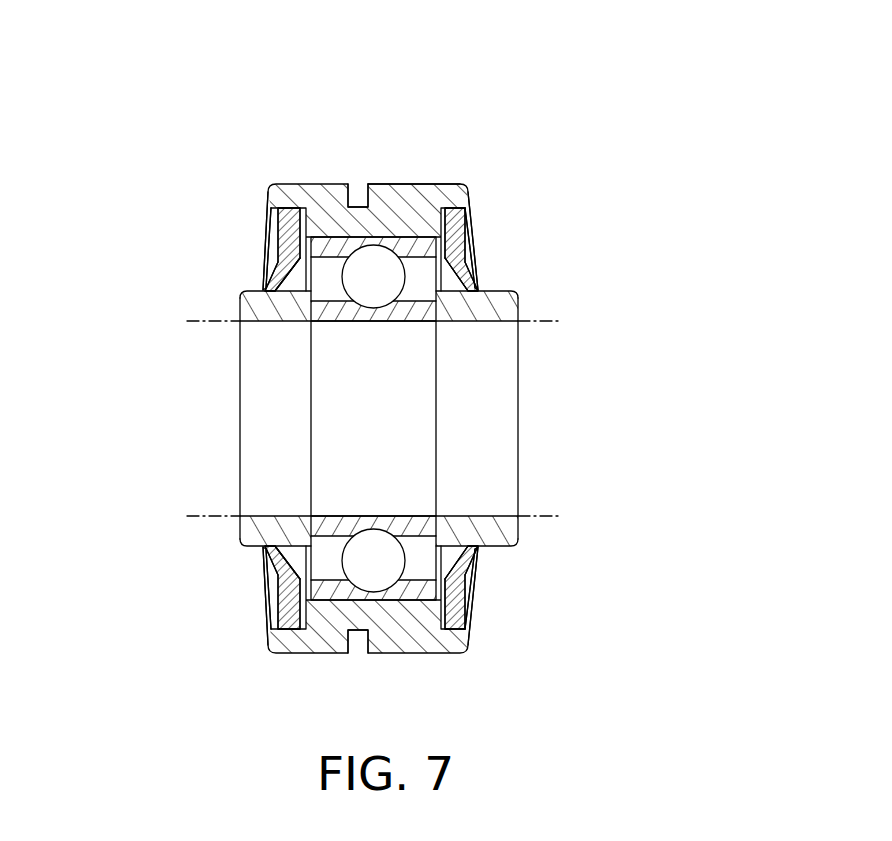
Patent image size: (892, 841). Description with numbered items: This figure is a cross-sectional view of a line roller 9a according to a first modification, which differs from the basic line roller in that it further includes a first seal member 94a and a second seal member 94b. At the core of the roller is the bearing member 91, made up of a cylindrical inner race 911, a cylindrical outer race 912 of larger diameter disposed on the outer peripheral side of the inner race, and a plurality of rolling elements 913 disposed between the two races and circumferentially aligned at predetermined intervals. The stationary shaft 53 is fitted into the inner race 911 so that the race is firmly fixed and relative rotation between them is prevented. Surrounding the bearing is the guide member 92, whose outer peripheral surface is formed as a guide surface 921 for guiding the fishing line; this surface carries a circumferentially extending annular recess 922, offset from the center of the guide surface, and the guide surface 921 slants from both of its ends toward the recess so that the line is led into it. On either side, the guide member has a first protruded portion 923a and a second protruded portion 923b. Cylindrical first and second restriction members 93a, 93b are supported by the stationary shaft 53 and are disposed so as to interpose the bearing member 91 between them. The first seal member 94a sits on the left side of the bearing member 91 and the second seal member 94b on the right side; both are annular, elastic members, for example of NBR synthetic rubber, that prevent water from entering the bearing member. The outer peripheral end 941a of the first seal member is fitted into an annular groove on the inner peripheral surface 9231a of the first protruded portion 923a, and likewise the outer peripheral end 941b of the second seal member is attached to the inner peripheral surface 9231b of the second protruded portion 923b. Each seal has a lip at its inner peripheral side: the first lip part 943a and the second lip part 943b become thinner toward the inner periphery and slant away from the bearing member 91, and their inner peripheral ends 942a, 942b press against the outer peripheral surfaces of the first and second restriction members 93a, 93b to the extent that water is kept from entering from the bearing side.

The line roller 9a is at (371, 328).
The guide member 92 is at (370, 371).
The guide surface 921 is at (408, 184).
The annular recess 922 is at (357, 205).
The first protruded portion 923a is at (272, 191).
The second protruded portion 923b is at (469, 196).
The inner peripheral surface of the first protruded portion 9231a is at (268, 216).
The inner peripheral surface of the second protruded portion 9231b is at (470, 216).
The first seal member 94a is at (185, 410).
The second seal member 94b is at (558, 412).
The outer peripheral end of the first seal member 941a is at (277, 217).
The outer peripheral end of the second seal member 941b is at (473, 222).
The inner peripheral end of the first lip part 942a is at (263, 290).
The inner peripheral end of the second lip part 942b is at (480, 289).
The first lip part 943a is at (282, 265).
The second lip part 943b is at (470, 240).
The first restriction member 93a is at (240, 308).
The second restriction member 93b is at (520, 312).
The bearing member 91 is at (448, 418).
The inner race 911 is at (348, 312).
The outer race 912 is at (415, 248).
The rolling elements 913 is at (371, 290).
The stationary shaft 53 is at (198, 505).